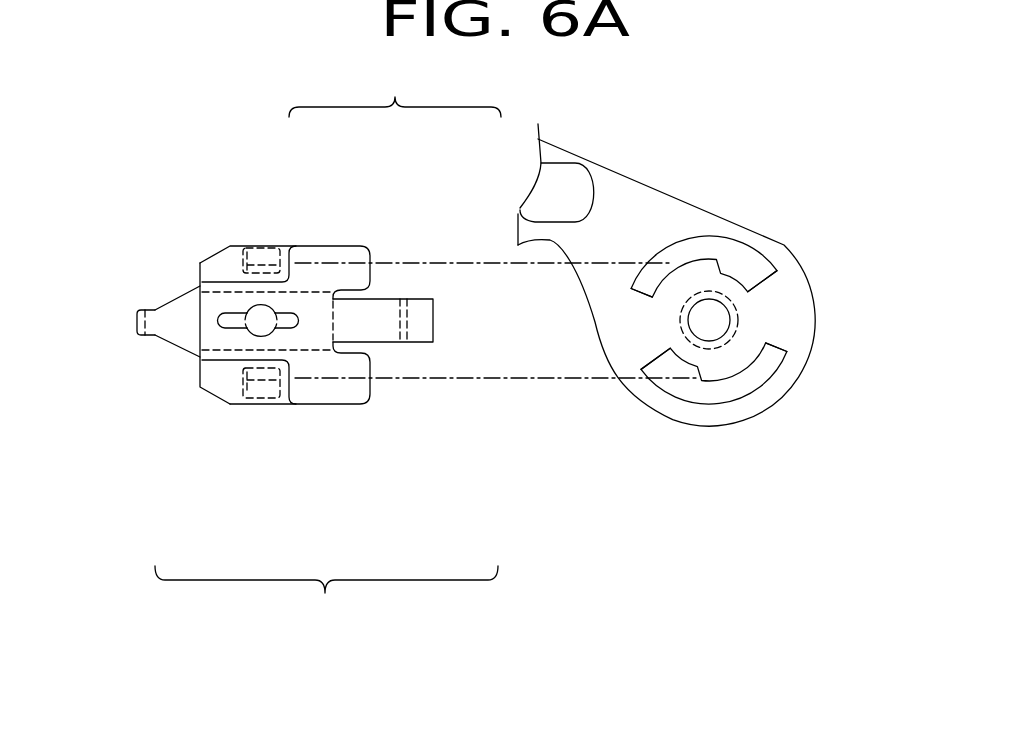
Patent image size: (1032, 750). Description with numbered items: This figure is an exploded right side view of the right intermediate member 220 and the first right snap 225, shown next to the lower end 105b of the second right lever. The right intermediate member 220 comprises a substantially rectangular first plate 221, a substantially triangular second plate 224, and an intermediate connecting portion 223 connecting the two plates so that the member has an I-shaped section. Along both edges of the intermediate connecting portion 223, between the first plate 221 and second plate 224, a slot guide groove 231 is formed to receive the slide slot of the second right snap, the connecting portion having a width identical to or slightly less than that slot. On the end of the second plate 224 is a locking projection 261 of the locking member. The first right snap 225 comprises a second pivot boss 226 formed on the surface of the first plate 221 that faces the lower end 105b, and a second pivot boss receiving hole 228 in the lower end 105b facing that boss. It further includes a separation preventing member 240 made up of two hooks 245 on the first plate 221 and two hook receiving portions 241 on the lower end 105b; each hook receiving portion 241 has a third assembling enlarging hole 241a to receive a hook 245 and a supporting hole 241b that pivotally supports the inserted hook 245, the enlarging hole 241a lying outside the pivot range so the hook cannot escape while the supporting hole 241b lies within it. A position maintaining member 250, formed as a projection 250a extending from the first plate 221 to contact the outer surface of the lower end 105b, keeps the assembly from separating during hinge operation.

The lower end of the second right lever 105b is at (714, 214).
The right intermediate member 220 is at (343, 405).
The first plate 221 is at (203, 383).
The intermediate connecting portion 223 is at (228, 292).
The second plate 224 is at (317, 395).
The first right snap 225 is at (326, 597).
The second pivot boss 226 is at (246, 326).
The second pivot boss receiving hole 228 is at (688, 320).
The slot guide groove 231 is at (372, 245).
The separation preventing member 240 is at (395, 89).
The hook receiving portion 241 is at (657, 252).
The third assembling enlarging hole 241a is at (768, 265).
The supporting hole 241b is at (635, 284).
The hook 245 is at (265, 247).
The position maintaining member 250 is at (135, 317).
The projection 250a is at (147, 336).
The locking projection 261 is at (425, 343).